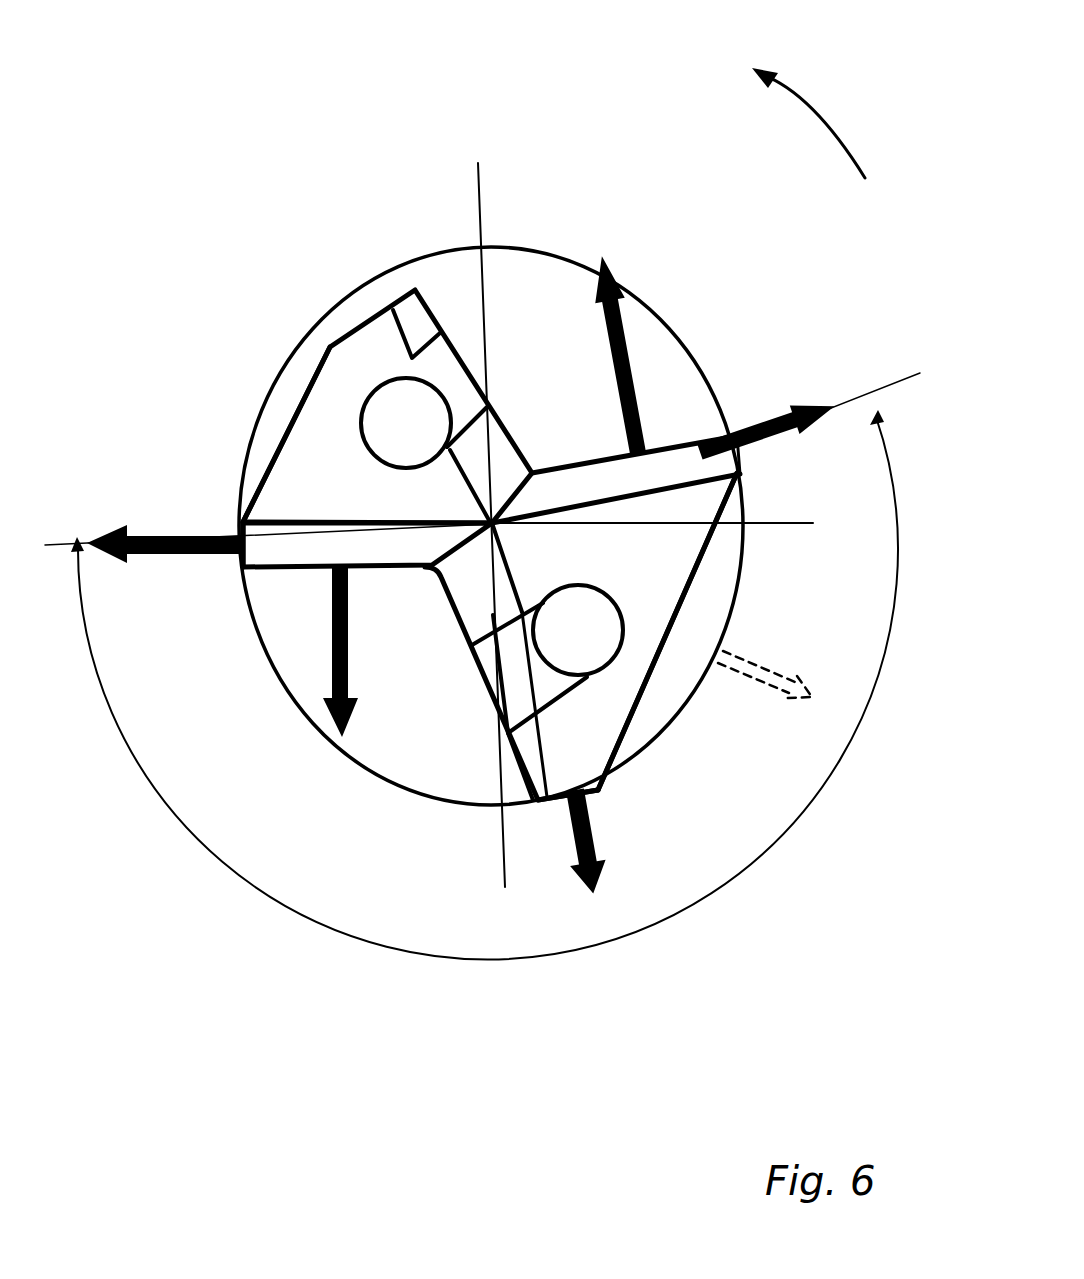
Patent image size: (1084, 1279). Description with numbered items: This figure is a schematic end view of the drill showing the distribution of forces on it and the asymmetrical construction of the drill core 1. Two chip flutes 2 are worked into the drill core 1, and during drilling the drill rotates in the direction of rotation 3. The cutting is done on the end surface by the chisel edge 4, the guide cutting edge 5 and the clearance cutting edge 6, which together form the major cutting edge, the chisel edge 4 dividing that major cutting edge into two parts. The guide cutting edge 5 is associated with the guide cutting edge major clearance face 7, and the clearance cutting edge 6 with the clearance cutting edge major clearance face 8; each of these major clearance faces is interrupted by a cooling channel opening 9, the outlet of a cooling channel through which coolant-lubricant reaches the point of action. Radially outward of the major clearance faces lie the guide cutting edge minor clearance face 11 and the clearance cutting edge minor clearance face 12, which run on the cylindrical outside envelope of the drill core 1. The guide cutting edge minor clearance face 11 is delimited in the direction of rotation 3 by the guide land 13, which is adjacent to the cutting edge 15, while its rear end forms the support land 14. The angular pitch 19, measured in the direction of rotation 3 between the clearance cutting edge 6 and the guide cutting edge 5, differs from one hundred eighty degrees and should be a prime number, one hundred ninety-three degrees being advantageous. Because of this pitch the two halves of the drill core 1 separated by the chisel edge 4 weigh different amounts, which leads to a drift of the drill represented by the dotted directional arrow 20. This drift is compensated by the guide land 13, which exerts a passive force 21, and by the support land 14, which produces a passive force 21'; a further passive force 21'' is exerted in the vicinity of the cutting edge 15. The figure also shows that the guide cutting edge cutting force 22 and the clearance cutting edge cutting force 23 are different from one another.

The drill core 1 is at (500, 458).
The chip flute 2 is at (655, 400).
The direction of rotation 3 is at (810, 103).
The chisel edge 4 is at (497, 527).
The guide cutting edge 5 is at (582, 460).
The clearance cutting edge 6 is at (387, 570).
The guide cutting edge major clearance face 7 is at (673, 567).
The clearance cutting edge major clearance face 8 is at (377, 367).
The cooling channel opening 9 is at (415, 442).
The guide cutting edge minor clearance face 11 is at (680, 622).
The clearance cutting edge minor clearance face 12 is at (282, 432).
The guide land 13 is at (743, 462).
The support land 14 is at (600, 783).
The cutting edge 15 is at (243, 570).
The angular pitch 19 is at (527, 966).
The directional arrow 20 is at (760, 677).
The passive force 21 is at (807, 407).
The passive force 21' is at (623, 842).
The passive force 21'' is at (165, 590).
The guide cutting edge cutting force 22 is at (642, 325).
The clearance cutting edge cutting force 23 is at (348, 648).